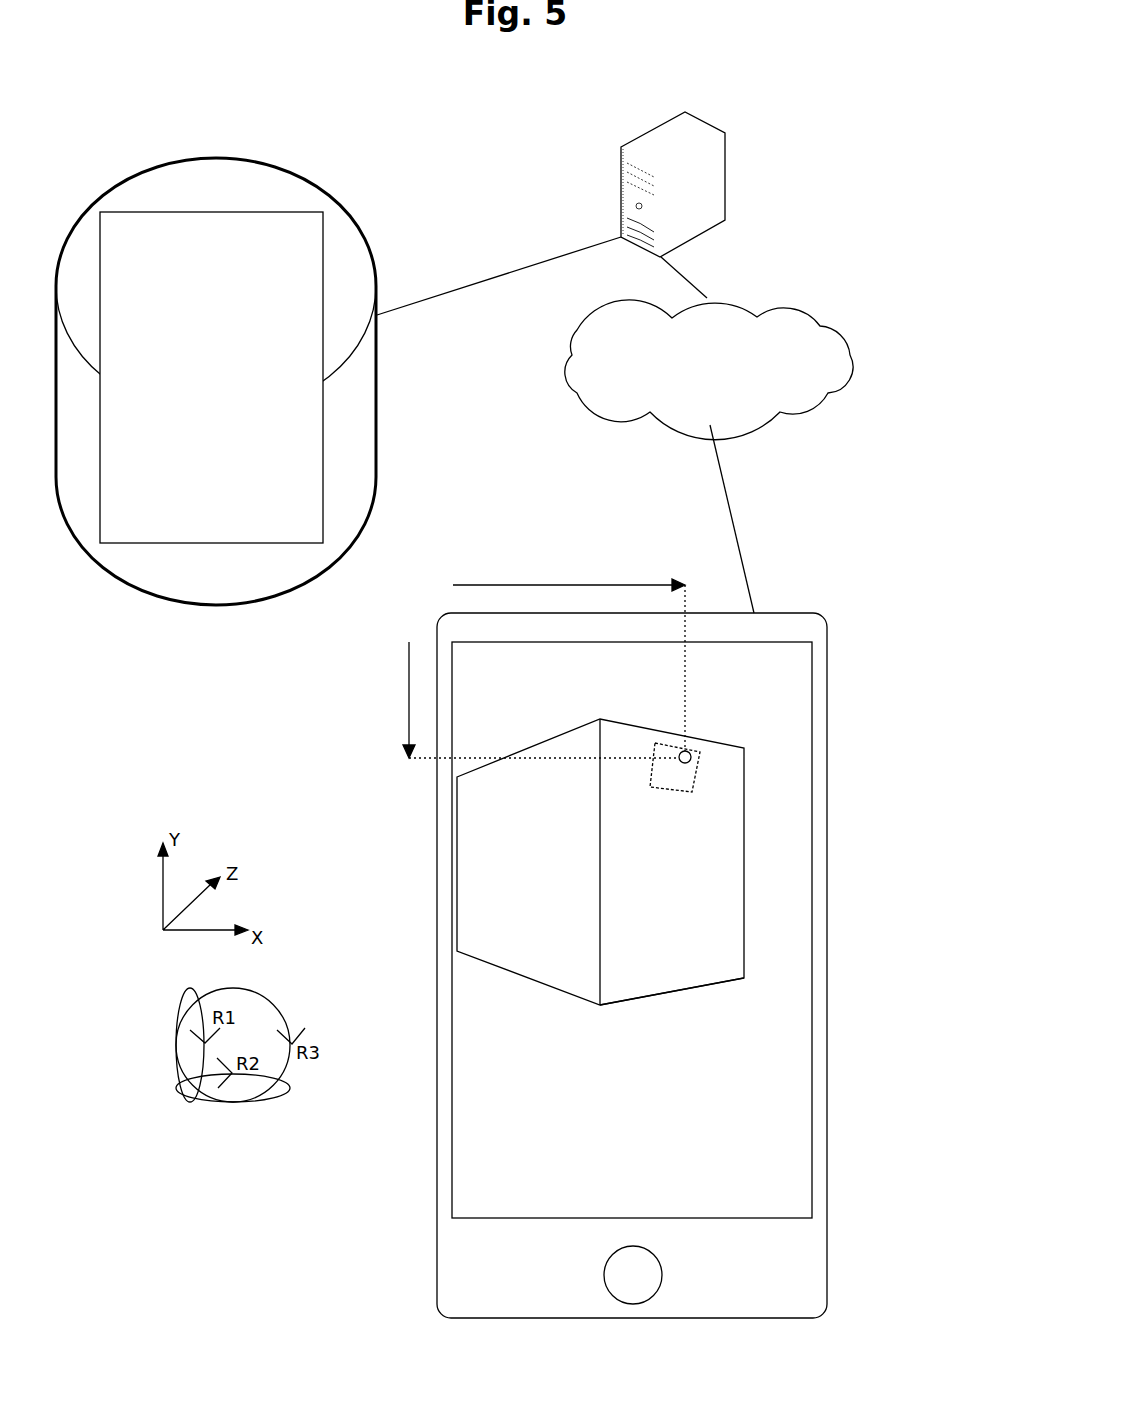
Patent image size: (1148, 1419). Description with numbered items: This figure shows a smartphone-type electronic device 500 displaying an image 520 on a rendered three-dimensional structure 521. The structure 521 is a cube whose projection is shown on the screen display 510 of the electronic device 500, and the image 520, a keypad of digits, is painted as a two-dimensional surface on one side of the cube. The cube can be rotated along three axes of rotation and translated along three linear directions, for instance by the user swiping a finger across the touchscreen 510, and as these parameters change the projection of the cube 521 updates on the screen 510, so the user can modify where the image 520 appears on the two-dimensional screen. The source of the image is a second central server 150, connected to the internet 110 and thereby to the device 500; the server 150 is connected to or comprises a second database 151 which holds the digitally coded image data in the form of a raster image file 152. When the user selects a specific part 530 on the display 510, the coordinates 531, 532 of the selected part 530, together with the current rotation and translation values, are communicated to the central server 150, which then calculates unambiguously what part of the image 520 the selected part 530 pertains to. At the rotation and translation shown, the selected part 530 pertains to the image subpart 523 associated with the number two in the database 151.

The internet 110 is at (709, 370).
The second central server 150 is at (673, 184).
The second database 151 is at (216, 430).
The raster image file 152 is at (180, 543).
The electronic device 500 is at (827, 937).
The screen display 510 is at (812, 1026).
The image 520 is at (718, 843).
The three-dimensional structure 521 is at (703, 987).
The image subpart 523 is at (693, 783).
The selected part 530 is at (689, 752).
The coordinate 531 is at (569, 657).
The coordinate 532 is at (525, 700).